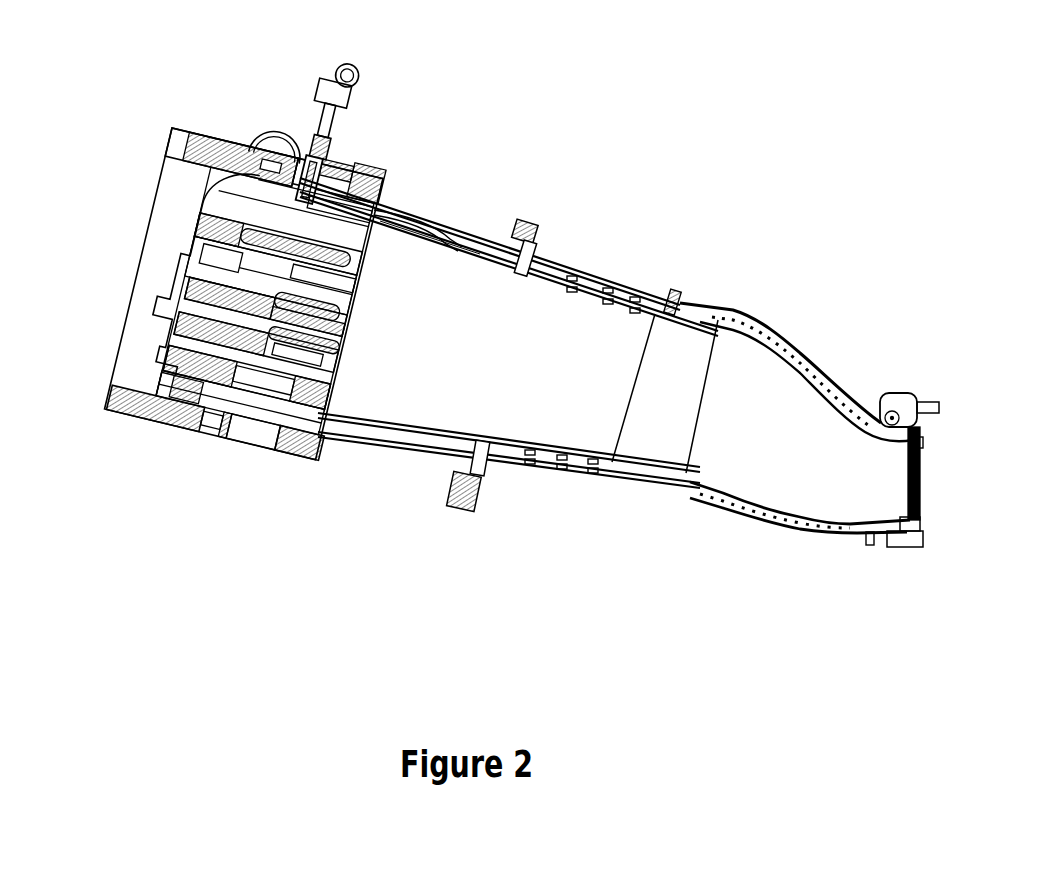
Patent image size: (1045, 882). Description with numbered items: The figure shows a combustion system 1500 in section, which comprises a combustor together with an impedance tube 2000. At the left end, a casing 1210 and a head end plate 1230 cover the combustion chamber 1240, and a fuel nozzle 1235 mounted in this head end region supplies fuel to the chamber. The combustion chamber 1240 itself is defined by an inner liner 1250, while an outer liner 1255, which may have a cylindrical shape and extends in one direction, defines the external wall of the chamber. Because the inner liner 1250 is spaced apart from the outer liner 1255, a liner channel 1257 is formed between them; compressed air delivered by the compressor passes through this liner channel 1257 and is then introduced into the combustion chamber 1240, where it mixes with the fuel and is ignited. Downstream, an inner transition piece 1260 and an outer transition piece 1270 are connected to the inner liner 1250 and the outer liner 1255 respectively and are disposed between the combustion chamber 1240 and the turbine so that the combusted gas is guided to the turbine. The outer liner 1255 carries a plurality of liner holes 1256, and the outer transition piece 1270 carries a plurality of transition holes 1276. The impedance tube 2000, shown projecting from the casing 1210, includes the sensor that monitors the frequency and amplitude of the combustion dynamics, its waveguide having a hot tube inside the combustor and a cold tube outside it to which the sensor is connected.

The combustion system 1500 is at (86, 27).
The casing 1210 is at (193, 133).
The head end plate 1230 is at (166, 262).
The fuel nozzle 1235 is at (190, 357).
The impedance tube 2000 is at (327, 157).
The combustion chamber 1240 is at (390, 398).
The inner liner 1250 is at (466, 250).
The outer liner 1255 is at (457, 228).
The liner holes 1256 is at (561, 464).
The liner channel 1257 is at (490, 252).
The inner transition piece 1260 is at (699, 313).
The outer transition piece 1270 is at (733, 311).
The transition holes 1276 is at (729, 505).